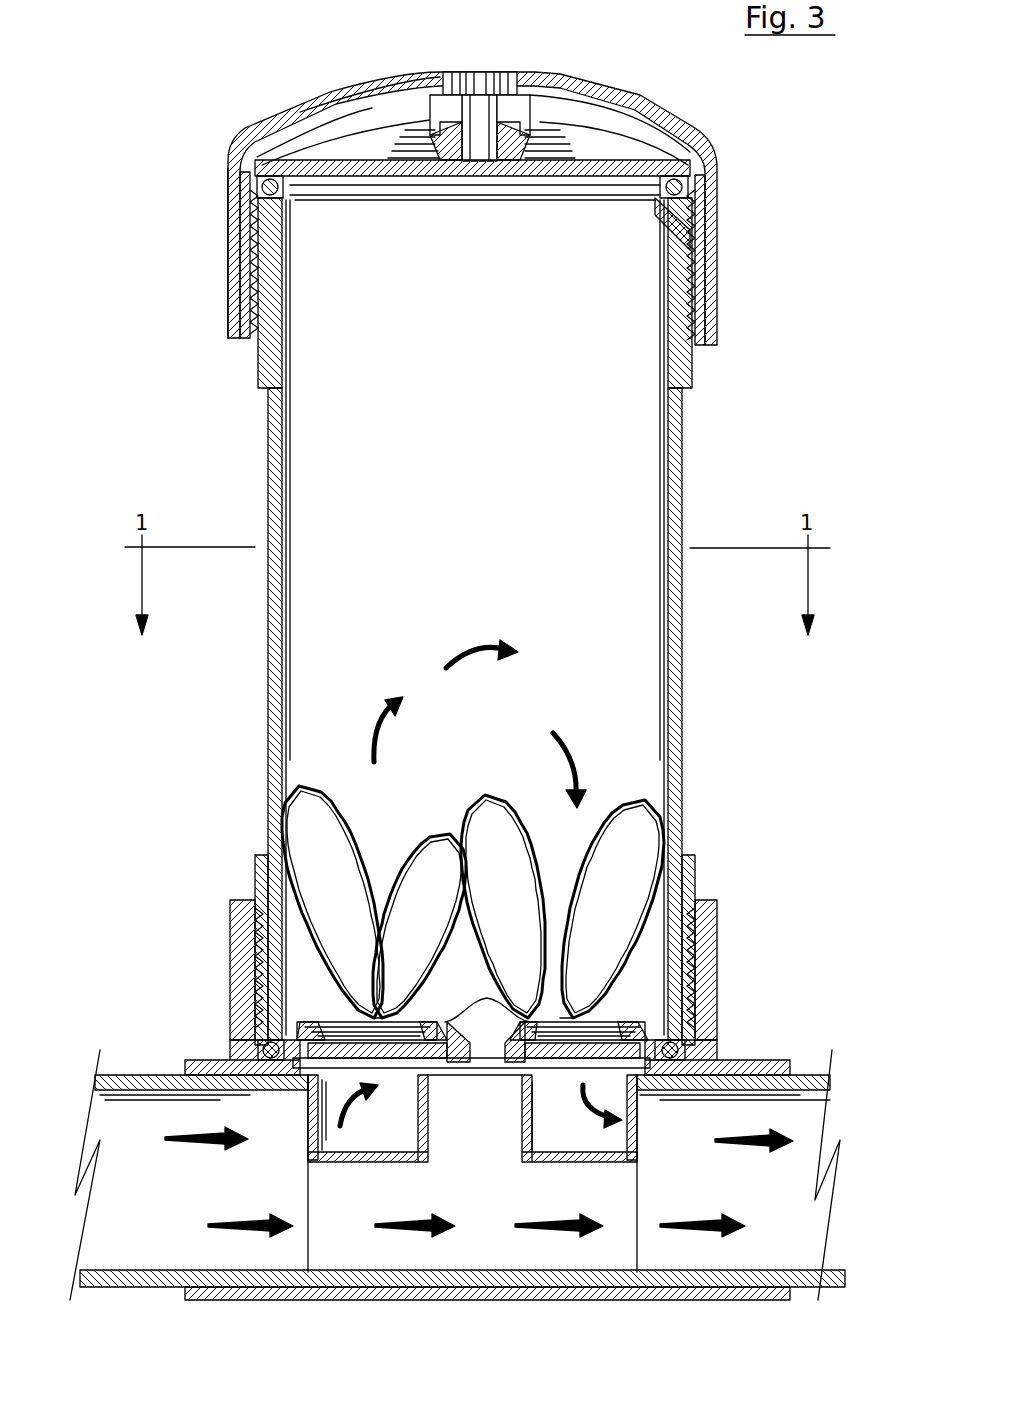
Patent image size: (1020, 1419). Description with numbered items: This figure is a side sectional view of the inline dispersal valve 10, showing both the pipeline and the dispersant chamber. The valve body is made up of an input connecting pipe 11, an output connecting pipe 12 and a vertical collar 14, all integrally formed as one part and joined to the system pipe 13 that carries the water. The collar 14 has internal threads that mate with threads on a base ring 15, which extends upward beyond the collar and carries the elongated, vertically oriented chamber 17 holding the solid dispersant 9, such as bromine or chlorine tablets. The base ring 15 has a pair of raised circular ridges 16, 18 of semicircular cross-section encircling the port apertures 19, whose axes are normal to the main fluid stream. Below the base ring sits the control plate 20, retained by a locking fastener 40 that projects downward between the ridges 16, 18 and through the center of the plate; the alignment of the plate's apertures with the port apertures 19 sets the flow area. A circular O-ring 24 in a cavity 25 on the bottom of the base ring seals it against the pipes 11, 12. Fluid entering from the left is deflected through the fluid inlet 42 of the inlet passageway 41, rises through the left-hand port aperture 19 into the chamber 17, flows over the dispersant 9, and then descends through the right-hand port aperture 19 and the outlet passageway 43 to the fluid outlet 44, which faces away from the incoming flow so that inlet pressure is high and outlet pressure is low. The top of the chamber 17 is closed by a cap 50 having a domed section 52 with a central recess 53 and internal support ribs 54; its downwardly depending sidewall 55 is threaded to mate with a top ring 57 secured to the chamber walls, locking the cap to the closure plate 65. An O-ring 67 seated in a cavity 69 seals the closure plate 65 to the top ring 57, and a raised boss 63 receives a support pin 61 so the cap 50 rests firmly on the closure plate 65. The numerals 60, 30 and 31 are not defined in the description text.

The dispersal valve 10 is at (248, 107).
The cap 50 is at (690, 132).
The domed section 52 is at (360, 75).
The internal support ribs 54 is at (332, 135).
The recess 53 is at (520, 75).
The support pin 61 is at (487, 72).
The raised boss 63 is at (430, 108).
The closure plate 65 is at (625, 155).
The O-ring 67 is at (688, 182).
The cavity 69 is at (660, 200).
The downwardly depending sidewall 55 is at (232, 300).
The top ring 57 is at (257, 372).
The chamber 17 is at (682, 682).
The solid dispersant 9 is at (331, 904).
The port apertures 19 is at (372, 1015).
The central gland 60 is at (487, 998).
The raised circular ridge 18 is at (340, 1022).
The raised circular ridge 16 is at (590, 1024).
The base ring 15 is at (692, 855).
The vertical collar 14 is at (713, 900).
The cavity 25 is at (258, 1028).
The circular O-ring 24 is at (258, 1052).
The input connecting pipe 11 is at (210, 1068).
The output connecting pipe 12 is at (735, 1068).
The system pipe 13 is at (120, 1290).
The locking fastener 40 is at (488, 1062).
The fluid inlet 42 is at (310, 1125).
The inlet passageway 41 is at (362, 1162).
The outlet passageway 43 is at (580, 1162).
The fluid outlet 44 is at (637, 1125).
The inlet flow 30 is at (350, 1104).
The outlet flow 31 is at (598, 1075).
The control plate 20 is at (548, 1065).